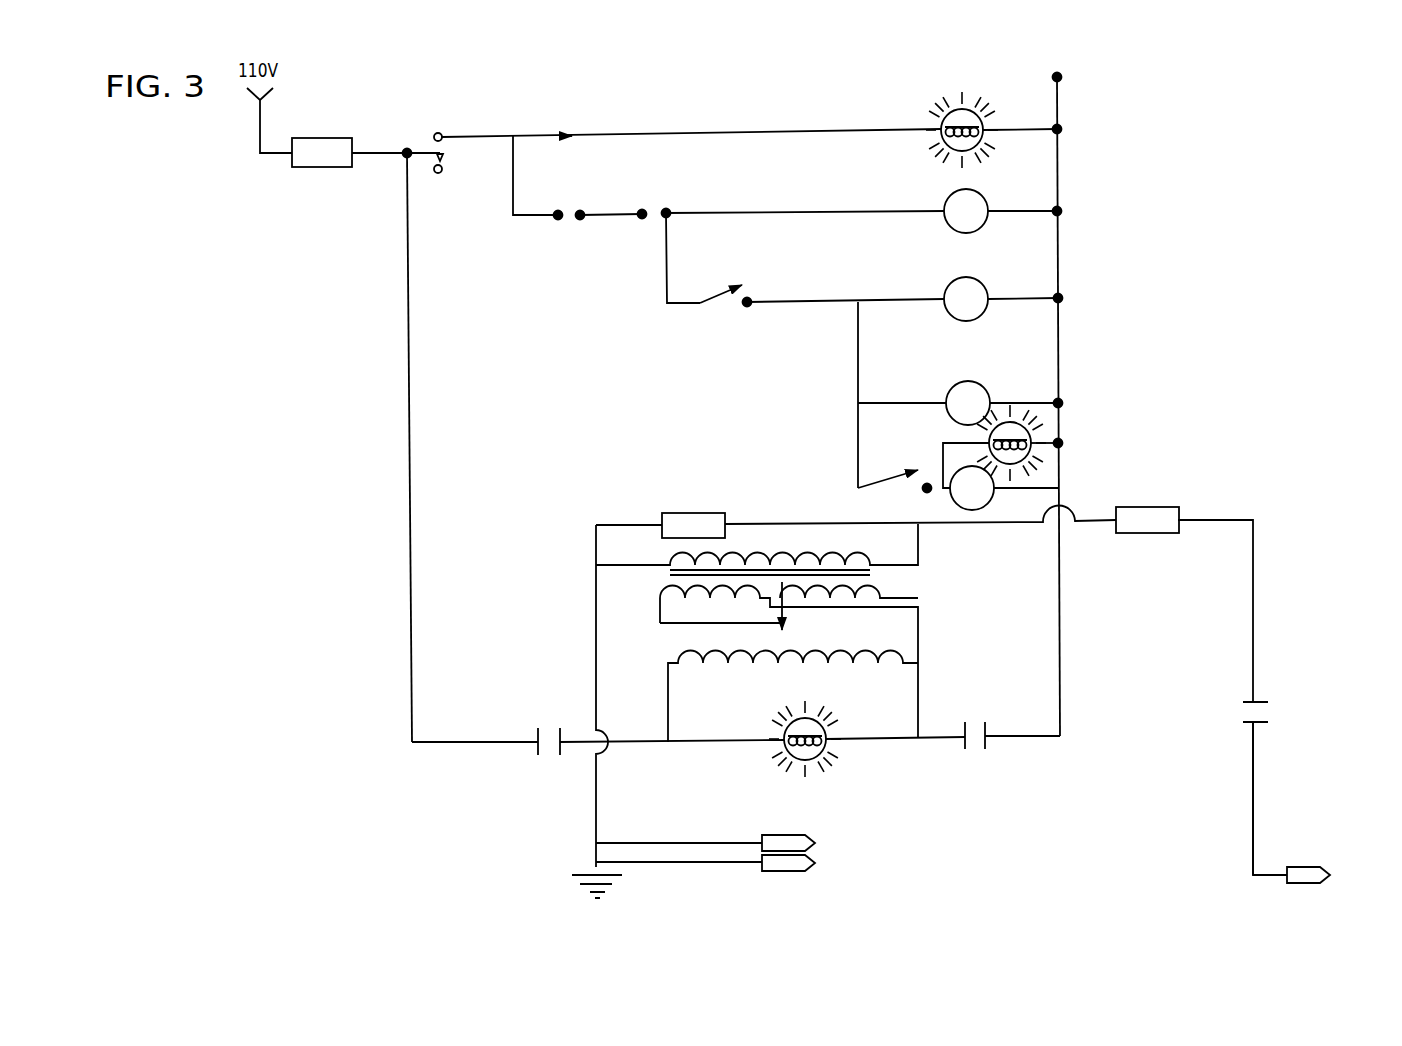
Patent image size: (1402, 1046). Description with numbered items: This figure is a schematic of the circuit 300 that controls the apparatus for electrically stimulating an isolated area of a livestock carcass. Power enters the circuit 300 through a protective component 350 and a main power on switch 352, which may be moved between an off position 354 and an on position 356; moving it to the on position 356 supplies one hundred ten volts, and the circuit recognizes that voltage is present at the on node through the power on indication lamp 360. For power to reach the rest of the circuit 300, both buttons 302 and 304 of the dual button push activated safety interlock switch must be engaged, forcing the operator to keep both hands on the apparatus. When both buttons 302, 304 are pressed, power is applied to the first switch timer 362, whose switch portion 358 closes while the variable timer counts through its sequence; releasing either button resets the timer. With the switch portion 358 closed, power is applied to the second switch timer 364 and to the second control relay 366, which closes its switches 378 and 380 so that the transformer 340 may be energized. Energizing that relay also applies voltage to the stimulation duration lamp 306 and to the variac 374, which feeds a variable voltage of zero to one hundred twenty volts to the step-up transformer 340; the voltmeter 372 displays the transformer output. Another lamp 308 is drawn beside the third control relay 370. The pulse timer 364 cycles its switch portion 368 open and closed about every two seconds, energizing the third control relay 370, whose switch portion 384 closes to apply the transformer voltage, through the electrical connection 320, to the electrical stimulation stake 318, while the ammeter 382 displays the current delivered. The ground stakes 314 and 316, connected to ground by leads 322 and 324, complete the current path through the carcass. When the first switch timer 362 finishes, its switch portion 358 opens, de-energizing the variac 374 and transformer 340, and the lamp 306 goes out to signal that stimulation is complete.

The circuit 300 is at (1165, 252).
The button of dual button push activated safety interlock switch 302 is at (570, 234).
The button of dual button push activated safety interlock switch 304 is at (652, 228).
The electrical stimulation duration lamp 306 is at (808, 705).
The indicator lamp 308 is at (978, 432).
The ground stake 314 is at (785, 838).
The ground stake 316 is at (785, 868).
The electrical stimulation stake 318 is at (1305, 868).
The electrical connection 320 is at (1258, 815).
The electrode lead 322 is at (658, 843).
The electrode lead 324 is at (667, 866).
The transformer 340 is at (791, 633).
The fuse 350 is at (318, 167).
The main power on switch 352 is at (458, 158).
The off position 354 is at (432, 176).
The on position 356 is at (441, 132).
The switch portion of switch timer T1 358 is at (726, 306).
The power on indication lamp 360 is at (947, 97).
The switch timer T1 362 is at (978, 185).
The switch timer T2 364 is at (970, 272).
The control relay C2 366 is at (950, 378).
The switch portion of switch timer T2 368 is at (912, 489).
The control relay C3 370 is at (990, 517).
The voltmeter 372 is at (682, 508).
The variac 374 is at (775, 668).
The switch of control relay C2 378 is at (970, 712).
The switch of control relay C2 380 is at (548, 722).
The ammeter 382 is at (1132, 500).
The switch portion of control relay CR3 384 is at (1272, 712).